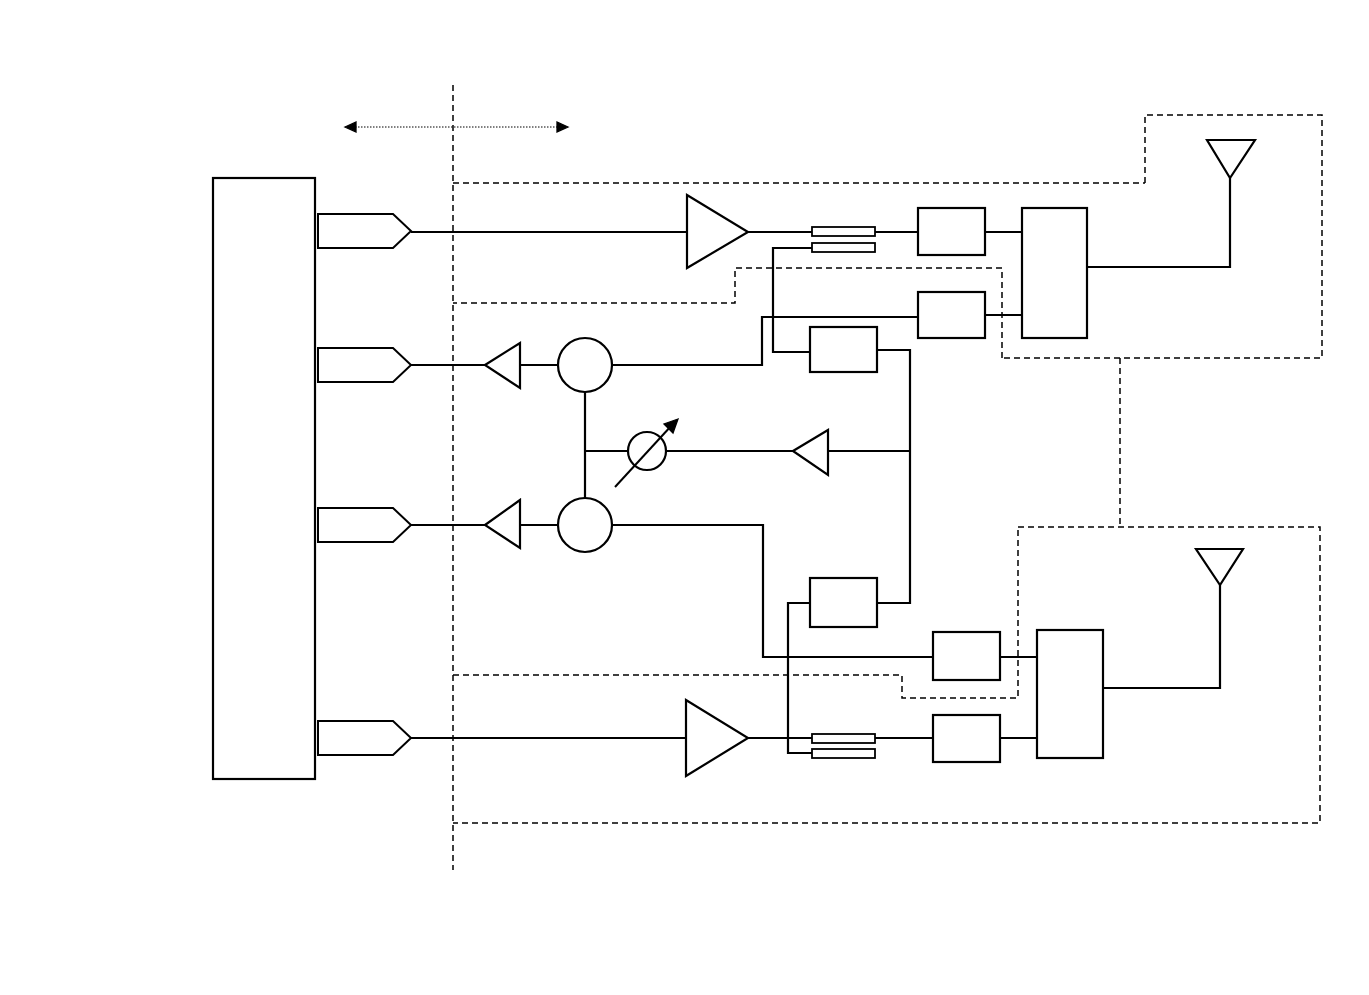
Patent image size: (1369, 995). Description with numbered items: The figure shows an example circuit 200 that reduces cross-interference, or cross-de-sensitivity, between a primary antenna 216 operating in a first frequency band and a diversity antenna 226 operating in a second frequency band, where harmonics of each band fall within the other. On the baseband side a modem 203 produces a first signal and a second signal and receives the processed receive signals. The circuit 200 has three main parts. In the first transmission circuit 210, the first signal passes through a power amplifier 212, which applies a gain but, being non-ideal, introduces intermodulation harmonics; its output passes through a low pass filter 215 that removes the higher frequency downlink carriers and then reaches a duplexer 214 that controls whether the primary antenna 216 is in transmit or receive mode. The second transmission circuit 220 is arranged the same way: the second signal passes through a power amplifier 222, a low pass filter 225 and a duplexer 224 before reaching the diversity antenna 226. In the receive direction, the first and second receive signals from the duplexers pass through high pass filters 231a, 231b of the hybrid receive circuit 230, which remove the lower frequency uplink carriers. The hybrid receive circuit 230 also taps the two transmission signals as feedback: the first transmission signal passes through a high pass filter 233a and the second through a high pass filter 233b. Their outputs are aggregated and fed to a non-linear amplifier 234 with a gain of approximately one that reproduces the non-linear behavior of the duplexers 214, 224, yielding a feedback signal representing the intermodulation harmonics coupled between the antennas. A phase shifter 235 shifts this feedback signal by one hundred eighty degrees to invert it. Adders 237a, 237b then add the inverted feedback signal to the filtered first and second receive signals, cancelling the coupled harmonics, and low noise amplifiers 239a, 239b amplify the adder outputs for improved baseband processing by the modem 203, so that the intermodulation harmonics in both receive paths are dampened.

The example circuit 200 is at (825, 28).
The modem 203 is at (266, 176).
The first transmission circuit 210 is at (1234, 113).
The power amplifier 212 is at (706, 194).
The duplexer 214 is at (1090, 215).
The low pass filter 215 is at (958, 207).
The primary antenna 216 is at (1246, 159).
The second transmission circuit 220 is at (1204, 826).
The power amplifier 222 is at (713, 763).
The duplexer 224 is at (1067, 760).
The low pass filter 225 is at (968, 764).
The diversity antenna 226 is at (1245, 567).
The hybrid receive circuit 230 is at (1122, 435).
The high pass filter 231a is at (957, 340).
The high pass filter 231b is at (965, 631).
The high pass filter 233a is at (858, 374).
The high pass filter 233b is at (845, 577).
The non-linear amplifier 234 is at (812, 437).
The phase shifter 235 is at (645, 432).
The adder 237a is at (586, 338).
The adder 237b is at (584, 553).
The low noise amplifier 239a is at (500, 352).
The low noise amplifier 239b is at (497, 545).